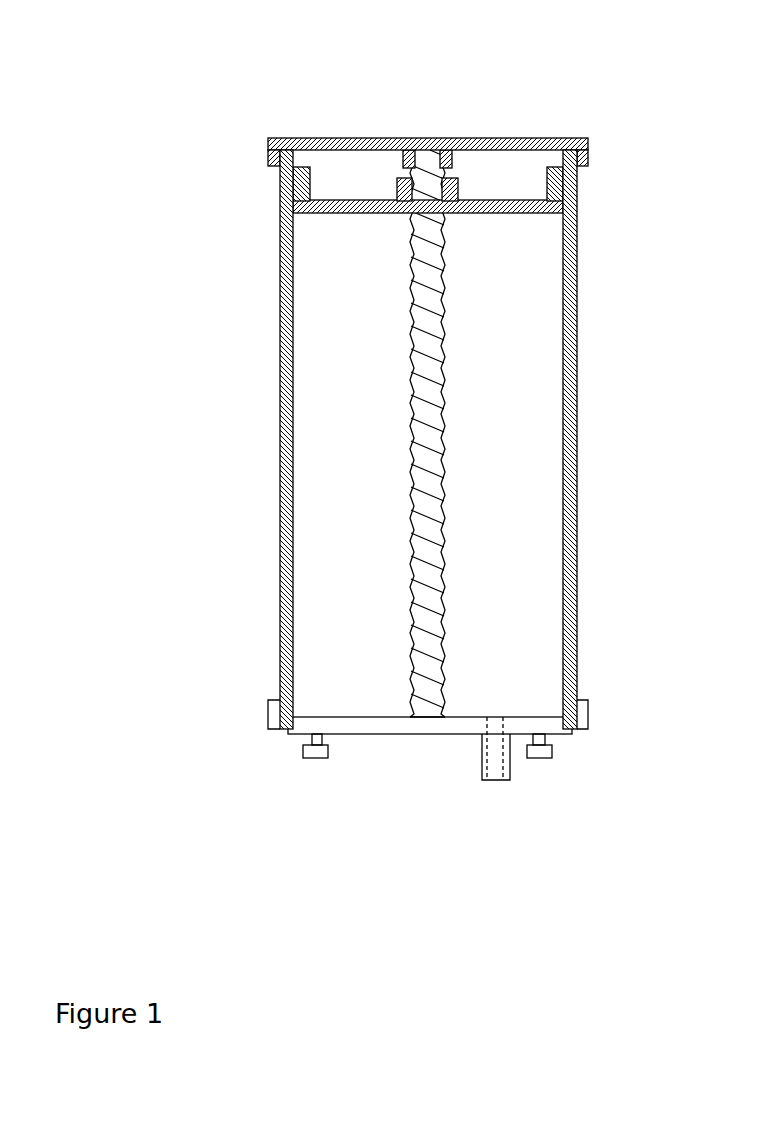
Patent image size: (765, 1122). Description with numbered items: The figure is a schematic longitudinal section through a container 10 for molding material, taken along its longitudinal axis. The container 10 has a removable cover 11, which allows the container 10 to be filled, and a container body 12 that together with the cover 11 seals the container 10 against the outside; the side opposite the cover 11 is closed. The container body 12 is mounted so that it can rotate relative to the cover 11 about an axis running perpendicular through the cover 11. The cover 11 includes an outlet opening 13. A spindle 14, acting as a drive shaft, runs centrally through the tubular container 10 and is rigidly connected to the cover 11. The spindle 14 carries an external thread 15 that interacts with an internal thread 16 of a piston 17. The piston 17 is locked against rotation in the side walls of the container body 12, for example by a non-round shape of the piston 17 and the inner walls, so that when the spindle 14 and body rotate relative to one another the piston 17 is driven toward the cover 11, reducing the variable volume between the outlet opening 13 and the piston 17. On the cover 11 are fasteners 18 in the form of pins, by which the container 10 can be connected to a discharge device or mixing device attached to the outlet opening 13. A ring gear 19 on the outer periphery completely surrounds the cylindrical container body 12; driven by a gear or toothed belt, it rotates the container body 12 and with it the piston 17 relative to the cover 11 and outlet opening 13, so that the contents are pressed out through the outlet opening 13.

The container 10 is at (197, 75).
The cover 11 is at (377, 720).
The container body 12 is at (387, 137).
The outlet opening 13 is at (495, 743).
The spindle 14 is at (425, 398).
The external thread 15 is at (445, 323).
The internal thread 16 is at (448, 178).
The piston 17 is at (331, 202).
The fasteners 18 is at (310, 745).
The ring gear 19 is at (273, 700).